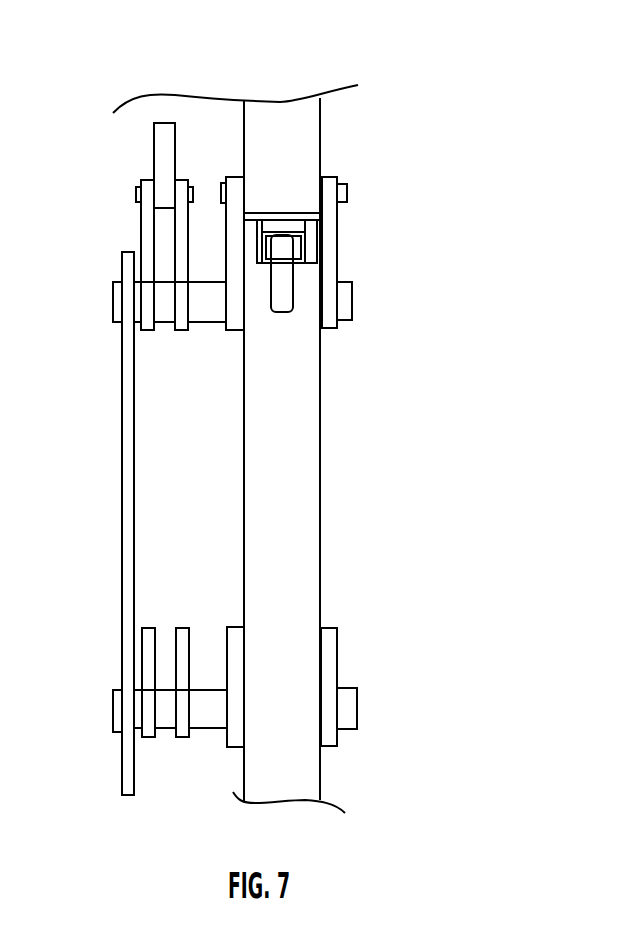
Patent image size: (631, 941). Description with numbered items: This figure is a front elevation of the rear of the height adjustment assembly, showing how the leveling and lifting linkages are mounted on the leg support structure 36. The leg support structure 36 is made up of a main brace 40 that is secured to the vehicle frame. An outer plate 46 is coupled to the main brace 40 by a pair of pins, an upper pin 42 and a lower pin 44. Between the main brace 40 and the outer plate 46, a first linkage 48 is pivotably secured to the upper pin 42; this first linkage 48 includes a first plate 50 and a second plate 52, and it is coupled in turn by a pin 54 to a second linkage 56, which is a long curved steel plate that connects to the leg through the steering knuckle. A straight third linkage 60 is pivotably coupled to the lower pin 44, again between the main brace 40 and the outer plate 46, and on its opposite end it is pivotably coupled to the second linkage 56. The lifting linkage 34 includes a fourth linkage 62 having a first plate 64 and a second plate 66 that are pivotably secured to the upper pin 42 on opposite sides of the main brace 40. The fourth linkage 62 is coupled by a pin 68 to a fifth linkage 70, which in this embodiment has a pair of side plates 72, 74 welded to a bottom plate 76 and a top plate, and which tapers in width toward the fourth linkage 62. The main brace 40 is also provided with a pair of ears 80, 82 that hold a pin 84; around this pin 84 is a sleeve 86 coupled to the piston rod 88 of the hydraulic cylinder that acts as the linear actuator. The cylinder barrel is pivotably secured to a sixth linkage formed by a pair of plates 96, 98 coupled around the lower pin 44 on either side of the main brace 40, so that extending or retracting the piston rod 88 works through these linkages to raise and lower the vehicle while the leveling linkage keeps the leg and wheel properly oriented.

The lifting linkage 34 is at (388, 146).
The leg support structure 36 is at (368, 473).
The main brace 40 is at (323, 420).
The upper pin 42 is at (353, 307).
The pin 44 is at (358, 713).
The outer plate 46 is at (122, 513).
The first linkage 48 is at (132, 225).
The first plate 50 is at (143, 237).
The second plate 52 is at (188, 260).
The pin 54 is at (142, 197).
The second linkage 56 is at (160, 145).
The third linkage 60 is at (148, 606).
The fourth linkage 62 is at (365, 209).
The first plate 64 is at (223, 228).
The second plate 66 is at (338, 224).
The pin 68 is at (348, 192).
The fifth linkage 70 is at (214, 124).
The side plate 72 is at (255, 153).
The side plate 74 is at (324, 140).
The bottom plate 76 is at (287, 123).
The ear 80 is at (245, 248).
The ear 82 is at (314, 248).
The pin 84 is at (318, 258).
The sleeve 86 is at (267, 263).
The piston rod 88 is at (293, 290).
The plate 96 is at (233, 626).
The plate 98 is at (327, 627).